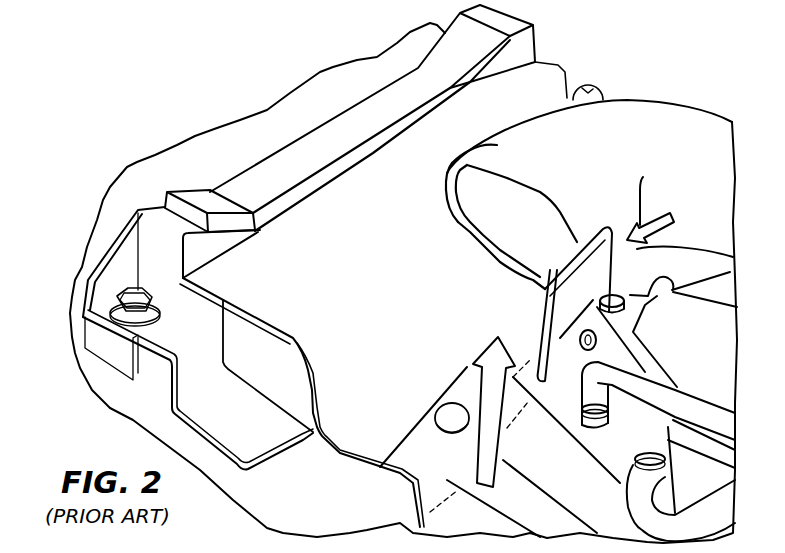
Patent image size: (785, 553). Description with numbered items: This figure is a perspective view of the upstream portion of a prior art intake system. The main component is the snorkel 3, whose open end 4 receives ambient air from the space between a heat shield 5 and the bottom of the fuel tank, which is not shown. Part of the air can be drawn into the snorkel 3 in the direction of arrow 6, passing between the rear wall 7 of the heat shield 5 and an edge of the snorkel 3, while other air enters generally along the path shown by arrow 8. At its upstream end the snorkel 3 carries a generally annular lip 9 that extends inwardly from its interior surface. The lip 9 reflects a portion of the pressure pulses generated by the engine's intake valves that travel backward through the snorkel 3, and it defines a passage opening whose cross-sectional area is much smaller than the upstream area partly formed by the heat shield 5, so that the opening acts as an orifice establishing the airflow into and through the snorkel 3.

The snorkel 3 is at (633, 107).
The open end 4 is at (522, 275).
The heat shield 5 is at (376, 400).
The arrow 6 is at (677, 216).
The rear wall 7 is at (570, 267).
The arrow 8 is at (496, 437).
The annular lip 9 is at (530, 182).